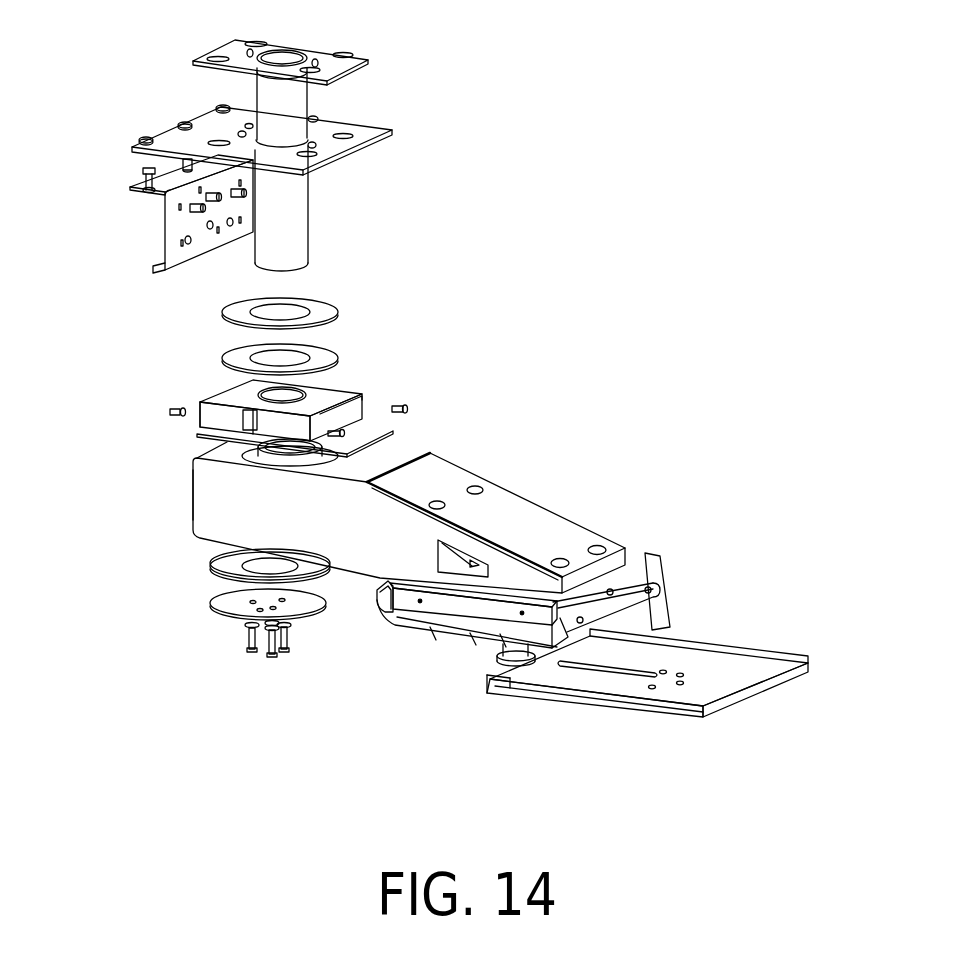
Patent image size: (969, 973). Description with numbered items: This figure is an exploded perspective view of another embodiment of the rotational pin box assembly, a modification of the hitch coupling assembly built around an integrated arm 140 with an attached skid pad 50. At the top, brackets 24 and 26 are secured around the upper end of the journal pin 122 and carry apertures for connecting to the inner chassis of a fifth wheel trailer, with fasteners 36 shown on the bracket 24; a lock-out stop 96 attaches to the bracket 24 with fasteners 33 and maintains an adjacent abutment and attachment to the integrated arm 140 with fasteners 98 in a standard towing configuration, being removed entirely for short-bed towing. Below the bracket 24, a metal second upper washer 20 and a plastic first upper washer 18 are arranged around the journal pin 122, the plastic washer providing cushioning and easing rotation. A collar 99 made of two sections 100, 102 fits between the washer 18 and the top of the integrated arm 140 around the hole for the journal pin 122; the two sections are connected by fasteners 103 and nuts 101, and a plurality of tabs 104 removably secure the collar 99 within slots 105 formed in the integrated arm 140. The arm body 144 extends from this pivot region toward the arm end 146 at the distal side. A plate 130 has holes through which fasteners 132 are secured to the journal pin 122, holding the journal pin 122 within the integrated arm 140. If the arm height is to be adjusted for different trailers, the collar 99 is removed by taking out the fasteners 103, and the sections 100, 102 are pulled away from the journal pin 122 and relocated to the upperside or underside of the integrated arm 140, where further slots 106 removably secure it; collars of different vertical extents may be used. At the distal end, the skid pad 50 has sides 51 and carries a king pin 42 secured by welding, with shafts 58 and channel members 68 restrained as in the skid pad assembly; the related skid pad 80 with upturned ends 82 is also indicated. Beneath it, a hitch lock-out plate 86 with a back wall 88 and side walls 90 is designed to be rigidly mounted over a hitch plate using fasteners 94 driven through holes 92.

The bracket 26 is at (287, 44).
The bracket 24 is at (295, 117).
The fasteners 36 is at (223, 107).
The fasteners 33 is at (143, 177).
The lock-out stop 96 is at (151, 214).
The journal pin 122 is at (347, 169).
The fasteners 98 is at (238, 197).
The second upper washer 20 is at (339, 298).
The first upper washer 18 is at (288, 476).
The section 102 is at (171, 388).
The collar 99 is at (322, 395).
The section 100 is at (382, 393).
The nuts 101 is at (167, 412).
The fasteners 103 is at (429, 427).
The tabs 104 is at (243, 454).
The slots 105 is at (215, 479).
The arm body 144 is at (177, 524).
The integrated arm 140 is at (445, 482).
The arm end 146 is at (645, 490).
The shafts 58 is at (650, 544).
The upturned ends 82 is at (526, 588).
The slots 106 is at (214, 581).
The plate 130 is at (226, 630).
The fasteners 132 is at (272, 656).
The fasteners 94 is at (643, 623).
The holes 92 is at (743, 632).
The side walls 90 is at (647, 694).
The hitch lock-out plate 86 is at (665, 669).
The back wall 88 is at (671, 722).
The channel members 68 is at (410, 660).
The skid pad 50 is at (477, 659).
The king pin 42 is at (476, 691).
The skid pad 80 is at (461, 683).
The sides 51 is at (443, 719).